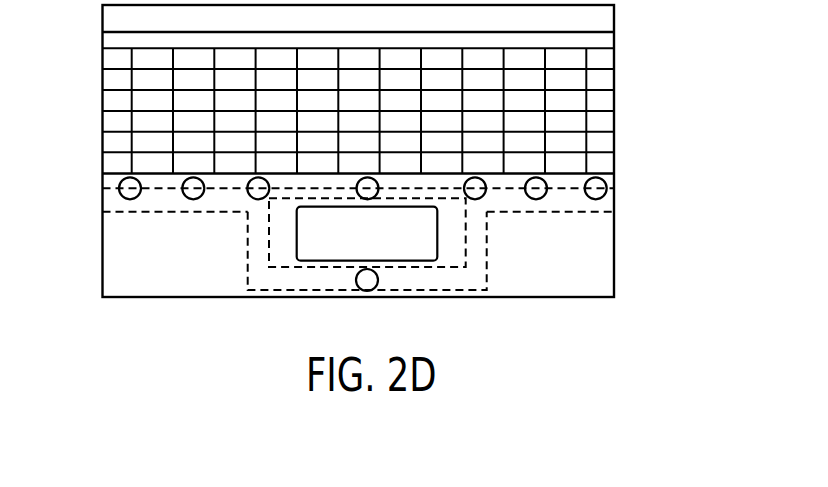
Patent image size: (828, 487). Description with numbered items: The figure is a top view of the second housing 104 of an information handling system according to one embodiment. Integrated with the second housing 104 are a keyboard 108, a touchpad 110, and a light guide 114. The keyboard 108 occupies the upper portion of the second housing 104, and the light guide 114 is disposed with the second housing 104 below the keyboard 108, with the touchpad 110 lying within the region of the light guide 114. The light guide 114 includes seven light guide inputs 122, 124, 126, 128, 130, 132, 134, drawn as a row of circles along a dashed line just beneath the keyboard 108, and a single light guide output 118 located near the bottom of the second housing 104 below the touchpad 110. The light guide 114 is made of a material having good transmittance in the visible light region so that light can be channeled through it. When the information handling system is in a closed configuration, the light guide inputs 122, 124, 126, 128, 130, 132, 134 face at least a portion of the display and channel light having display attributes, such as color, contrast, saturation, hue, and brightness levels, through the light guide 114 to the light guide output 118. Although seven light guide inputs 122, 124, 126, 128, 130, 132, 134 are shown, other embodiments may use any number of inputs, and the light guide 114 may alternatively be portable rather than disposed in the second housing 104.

The second housing 104 is at (614, 42).
The keyboard 108 is at (605, 121).
The touchpad 110 is at (293, 246).
The light guide 114 is at (488, 263).
The light guide output 118 is at (368, 291).
The light guide input 122 is at (120, 195).
The light guide input 124 is at (193, 199).
The light guide input 126 is at (258, 199).
The light guide input 128 is at (373, 198).
The light guide input 130 is at (483, 197).
The light guide input 132 is at (541, 198).
The light guide input 134 is at (605, 195).